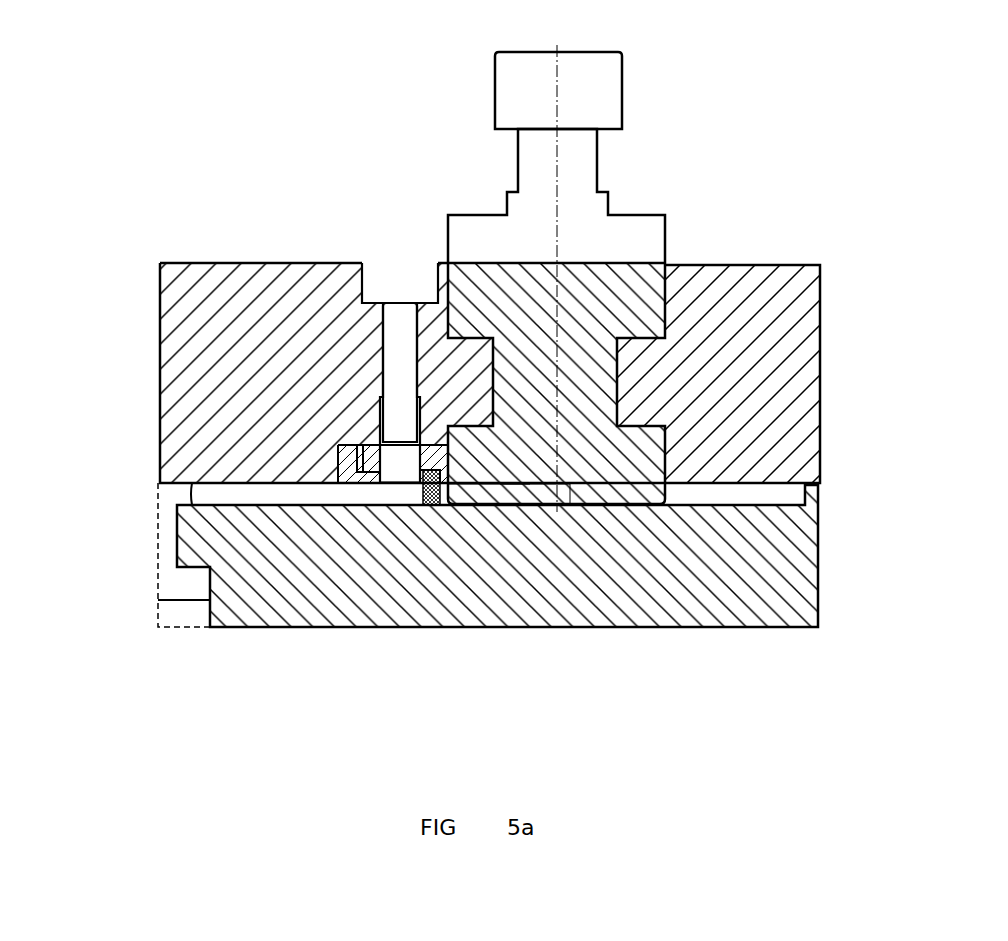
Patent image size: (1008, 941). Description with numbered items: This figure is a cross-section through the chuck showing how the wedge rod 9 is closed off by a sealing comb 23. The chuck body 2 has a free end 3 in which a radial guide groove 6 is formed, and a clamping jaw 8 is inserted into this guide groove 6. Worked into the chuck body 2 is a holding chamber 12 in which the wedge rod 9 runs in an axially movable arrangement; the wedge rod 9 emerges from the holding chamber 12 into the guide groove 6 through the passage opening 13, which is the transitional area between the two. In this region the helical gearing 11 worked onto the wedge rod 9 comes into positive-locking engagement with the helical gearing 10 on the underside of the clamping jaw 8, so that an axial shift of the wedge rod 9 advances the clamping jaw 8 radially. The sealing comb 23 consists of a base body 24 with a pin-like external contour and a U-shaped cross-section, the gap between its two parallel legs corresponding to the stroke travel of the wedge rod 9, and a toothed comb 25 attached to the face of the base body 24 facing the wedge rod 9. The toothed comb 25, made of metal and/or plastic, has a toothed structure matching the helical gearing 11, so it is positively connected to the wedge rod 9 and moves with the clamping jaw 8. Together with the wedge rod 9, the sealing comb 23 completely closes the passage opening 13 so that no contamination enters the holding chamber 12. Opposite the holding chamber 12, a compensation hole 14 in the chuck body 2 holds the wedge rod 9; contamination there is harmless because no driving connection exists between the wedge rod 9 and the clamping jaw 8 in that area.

The chuck body 2 is at (158, 337).
The free end 3 is at (213, 262).
The guide groove 6 is at (667, 267).
The clamping jaw 8 is at (448, 225).
The wedge rod 9 is at (303, 505).
The helical gearing 10 is at (605, 485).
The helical gearing 11 is at (513, 490).
The holding chamber 12 is at (158, 480).
The passage opening 13 is at (443, 505).
The compensation hole 14 is at (750, 483).
The sealing comb 23 is at (430, 446).
The base body 24 is at (368, 444).
The toothed comb 25 is at (427, 500).